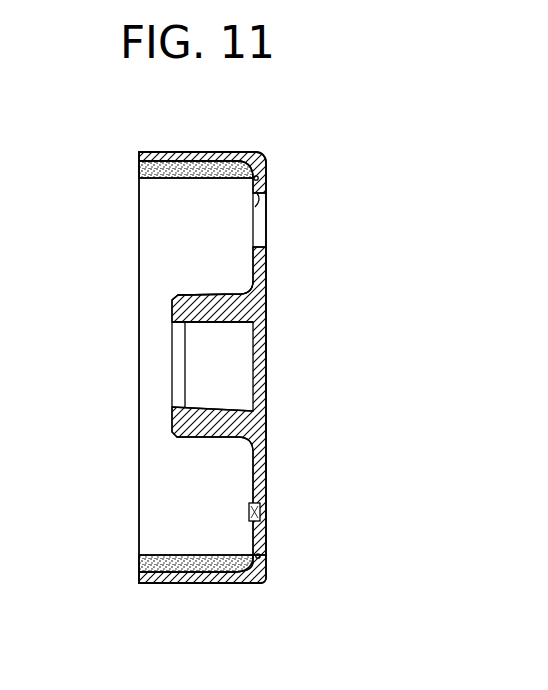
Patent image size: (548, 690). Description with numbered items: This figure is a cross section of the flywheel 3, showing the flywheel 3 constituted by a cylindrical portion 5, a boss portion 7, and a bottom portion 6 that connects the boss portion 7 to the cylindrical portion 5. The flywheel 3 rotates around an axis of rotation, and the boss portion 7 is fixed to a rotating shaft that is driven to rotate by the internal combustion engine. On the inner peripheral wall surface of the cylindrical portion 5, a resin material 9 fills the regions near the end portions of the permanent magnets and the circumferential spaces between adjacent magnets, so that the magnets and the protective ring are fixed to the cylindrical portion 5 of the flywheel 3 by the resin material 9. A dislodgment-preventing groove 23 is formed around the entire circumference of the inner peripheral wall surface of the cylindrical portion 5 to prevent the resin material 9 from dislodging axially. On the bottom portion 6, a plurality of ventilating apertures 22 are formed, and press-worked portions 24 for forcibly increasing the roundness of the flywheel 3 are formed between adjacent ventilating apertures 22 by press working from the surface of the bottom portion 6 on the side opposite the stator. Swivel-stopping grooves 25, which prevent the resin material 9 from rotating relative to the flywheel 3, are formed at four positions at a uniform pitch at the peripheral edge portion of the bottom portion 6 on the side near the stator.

The flywheel 3 is at (258, 152).
The cylindrical portion 5 is at (200, 585).
The bottom portion 6 is at (266, 272).
The boss portion 7 is at (236, 321).
The resin material 9 is at (160, 555).
The ventilating aperture 22 is at (266, 206).
The dislodgment-preventing groove 23 is at (215, 158).
The press-worked portion 24 is at (255, 511).
The swivel-stopping groove 25 is at (259, 178).